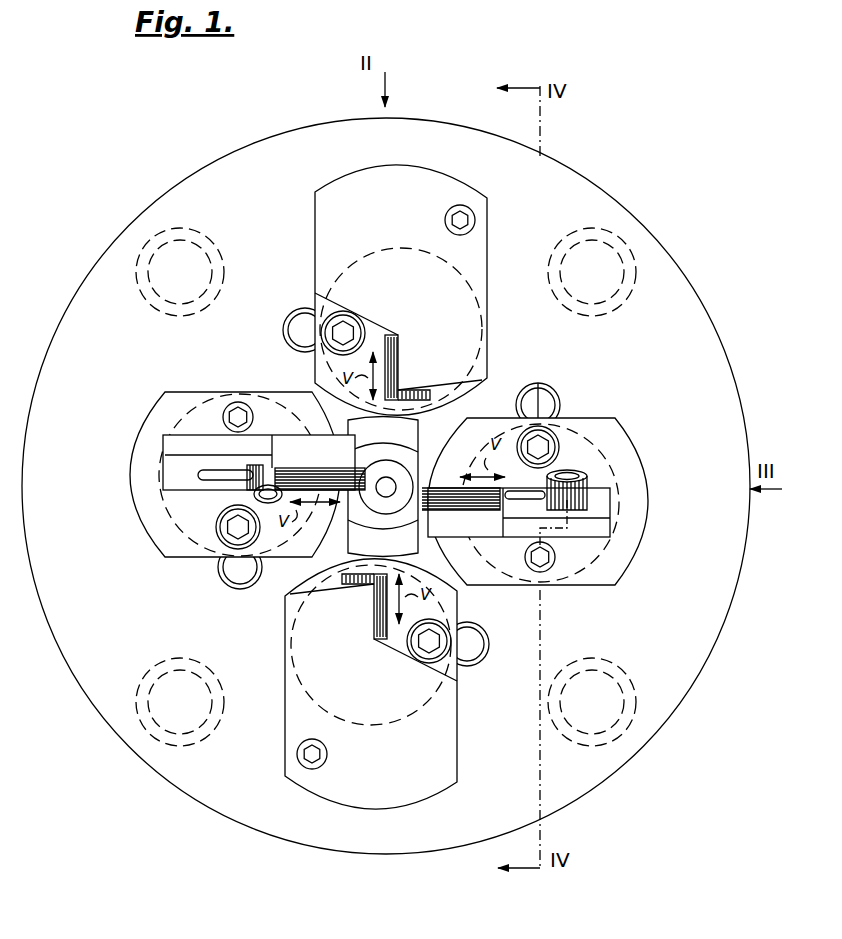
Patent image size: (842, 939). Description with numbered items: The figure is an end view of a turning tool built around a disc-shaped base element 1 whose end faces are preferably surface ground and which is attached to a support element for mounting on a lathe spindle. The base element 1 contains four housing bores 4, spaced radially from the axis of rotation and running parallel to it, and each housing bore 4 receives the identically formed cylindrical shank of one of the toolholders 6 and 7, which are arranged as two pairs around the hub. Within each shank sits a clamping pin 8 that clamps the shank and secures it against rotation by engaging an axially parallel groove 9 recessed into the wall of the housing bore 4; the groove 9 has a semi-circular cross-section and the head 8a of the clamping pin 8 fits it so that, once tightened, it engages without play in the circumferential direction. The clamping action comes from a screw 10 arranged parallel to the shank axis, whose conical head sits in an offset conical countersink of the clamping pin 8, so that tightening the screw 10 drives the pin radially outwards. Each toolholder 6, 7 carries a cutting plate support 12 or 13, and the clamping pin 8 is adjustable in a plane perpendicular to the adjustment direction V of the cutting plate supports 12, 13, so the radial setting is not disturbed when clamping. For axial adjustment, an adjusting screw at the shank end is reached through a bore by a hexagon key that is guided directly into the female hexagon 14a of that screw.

The base element 1 is at (658, 247).
The housing bore 4 is at (477, 273).
The toolholder 6 is at (155, 553).
The toolholder 7 is at (470, 176).
The clamping pin 8 is at (460, 682).
The head of the clamping pin 8a is at (232, 588).
The axially parallel groove 9 is at (240, 578).
The screw 10 is at (228, 541).
The cutting plate support 12 is at (292, 447).
The cutting plate support 13 is at (402, 388).
The female hexagon 14a is at (473, 218).